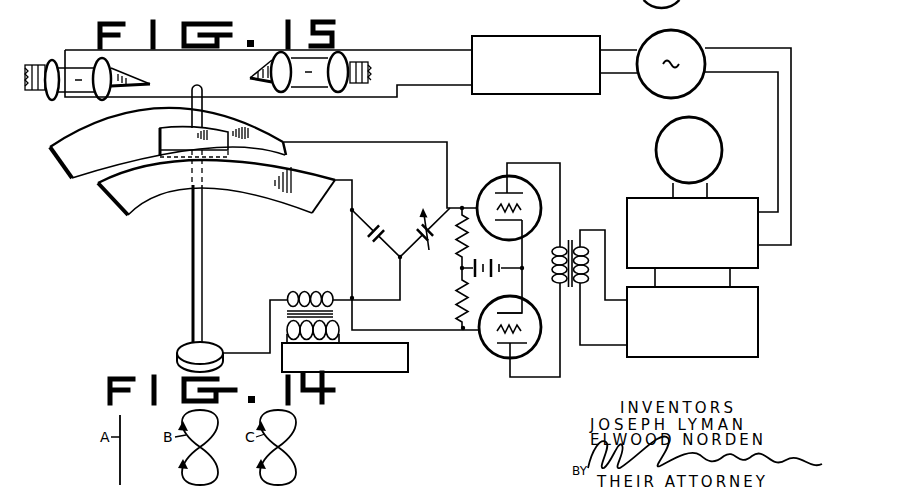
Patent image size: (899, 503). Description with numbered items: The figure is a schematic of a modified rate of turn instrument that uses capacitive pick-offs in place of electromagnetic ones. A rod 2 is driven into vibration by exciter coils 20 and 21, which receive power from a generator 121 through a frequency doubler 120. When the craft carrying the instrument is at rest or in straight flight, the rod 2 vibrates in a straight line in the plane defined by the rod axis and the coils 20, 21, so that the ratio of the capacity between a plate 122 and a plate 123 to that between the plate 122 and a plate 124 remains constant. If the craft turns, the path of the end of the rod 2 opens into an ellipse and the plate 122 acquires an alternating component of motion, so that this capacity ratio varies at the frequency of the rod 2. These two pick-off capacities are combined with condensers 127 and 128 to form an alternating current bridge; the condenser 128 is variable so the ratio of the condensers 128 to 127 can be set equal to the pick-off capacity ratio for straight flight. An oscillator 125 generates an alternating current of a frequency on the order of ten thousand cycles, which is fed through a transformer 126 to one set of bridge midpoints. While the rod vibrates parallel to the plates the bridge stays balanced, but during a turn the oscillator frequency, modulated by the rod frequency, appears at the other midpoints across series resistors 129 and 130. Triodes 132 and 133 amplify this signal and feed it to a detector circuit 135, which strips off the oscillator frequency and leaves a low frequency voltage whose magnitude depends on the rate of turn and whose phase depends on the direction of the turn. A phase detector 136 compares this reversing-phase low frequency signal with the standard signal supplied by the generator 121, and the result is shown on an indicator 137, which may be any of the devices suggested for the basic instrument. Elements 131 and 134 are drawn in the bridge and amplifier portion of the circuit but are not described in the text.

The rod 2 is at (205, 242).
The exciter coil 20 is at (70, 96).
The exciter coil 21 is at (313, 94).
The frequency doubler 120 is at (527, 95).
The generator 121 is at (700, 87).
The plate 122 is at (222, 127).
The plate 123 is at (276, 138).
The plate 124 is at (320, 168).
The oscillator 125 is at (390, 373).
The transformer 126 is at (298, 290).
The condenser 127 is at (373, 222).
The condenser 128 is at (418, 217).
The series resistor 129 is at (455, 258).
The series resistor 130 is at (456, 306).
The battery 131 is at (492, 257).
The triode 132 is at (486, 183).
The triode 133 is at (493, 355).
The output transformer 134 is at (572, 242).
The detector circuit 135 is at (728, 356).
The phase detector 136 is at (722, 197).
The indicator 137 is at (725, 159).